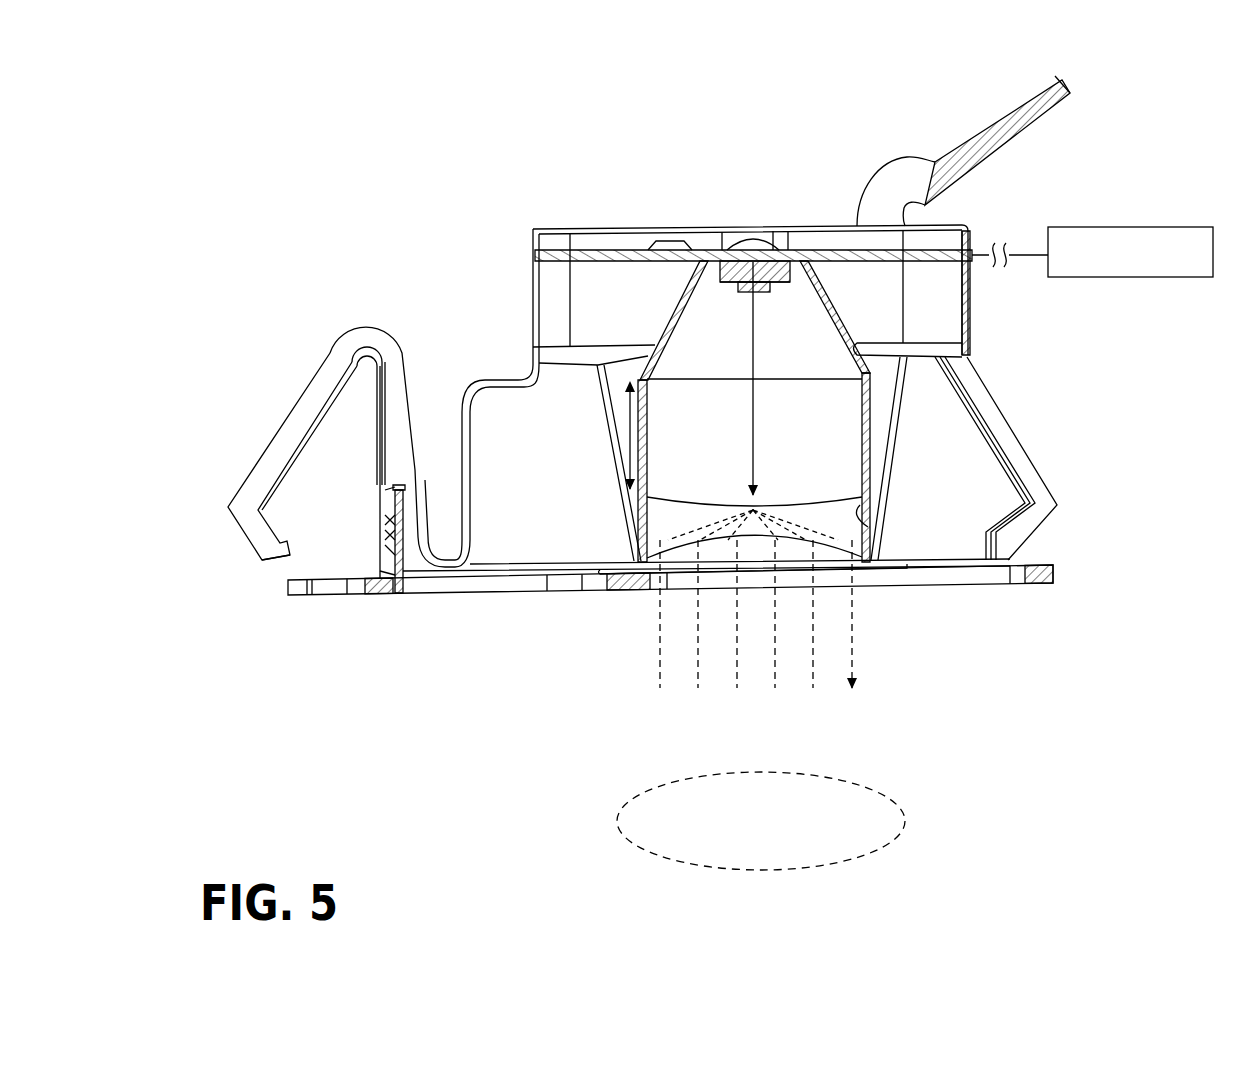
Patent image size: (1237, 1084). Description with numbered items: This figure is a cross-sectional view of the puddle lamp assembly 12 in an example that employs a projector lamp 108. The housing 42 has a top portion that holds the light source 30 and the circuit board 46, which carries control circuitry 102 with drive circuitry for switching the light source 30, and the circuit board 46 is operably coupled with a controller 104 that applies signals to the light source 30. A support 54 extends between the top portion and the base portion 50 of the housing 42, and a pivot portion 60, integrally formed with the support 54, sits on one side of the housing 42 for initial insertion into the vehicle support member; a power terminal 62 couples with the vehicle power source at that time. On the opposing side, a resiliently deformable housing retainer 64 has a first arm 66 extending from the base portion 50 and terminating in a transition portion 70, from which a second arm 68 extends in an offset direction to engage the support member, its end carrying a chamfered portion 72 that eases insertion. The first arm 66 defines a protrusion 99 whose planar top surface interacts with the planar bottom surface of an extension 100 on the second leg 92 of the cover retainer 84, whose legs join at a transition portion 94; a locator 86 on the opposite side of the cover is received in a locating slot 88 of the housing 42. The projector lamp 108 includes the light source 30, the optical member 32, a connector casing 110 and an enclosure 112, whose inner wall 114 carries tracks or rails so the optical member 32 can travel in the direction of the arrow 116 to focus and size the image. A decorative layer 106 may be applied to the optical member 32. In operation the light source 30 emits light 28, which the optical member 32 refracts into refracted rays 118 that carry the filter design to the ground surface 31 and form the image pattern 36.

The puddle lamp assembly 12 is at (585, 215).
The light 28 is at (870, 393).
The light source 30 is at (793, 273).
The ground surface 31 is at (930, 884).
The optical member 32 is at (868, 527).
The image pattern 36 is at (691, 868).
The housing 42 is at (969, 313).
The circuit board 46 is at (940, 247).
The base portion 50 is at (596, 588).
The support 54 is at (953, 458).
The pivot portion 60 is at (1057, 516).
The power terminal 62 is at (972, 133).
The housing retainer 64 is at (343, 325).
The first arm 66 is at (404, 396).
The second arm 68 is at (308, 399).
The transition portion 70 is at (368, 332).
The chamfered portion 72 is at (246, 549).
The cover retainer 84 is at (424, 592).
The locator 86 is at (1048, 589).
The locating slot 88 is at (1018, 589).
The second leg 92 is at (414, 525).
The transition portion 94 is at (396, 500).
The protrusion 99 is at (380, 530).
The extension 100 is at (394, 535).
The control circuitry 102 is at (669, 236).
The controller 104 is at (1087, 227).
The decorative layer 106 is at (334, 601).
The projector lamp 108 is at (752, 242).
The connector casing 110 is at (672, 310).
The enclosure 112 is at (873, 427).
The inner wall 114 is at (858, 470).
The arrow 116 is at (632, 425).
The refracted rays 118 is at (853, 650).